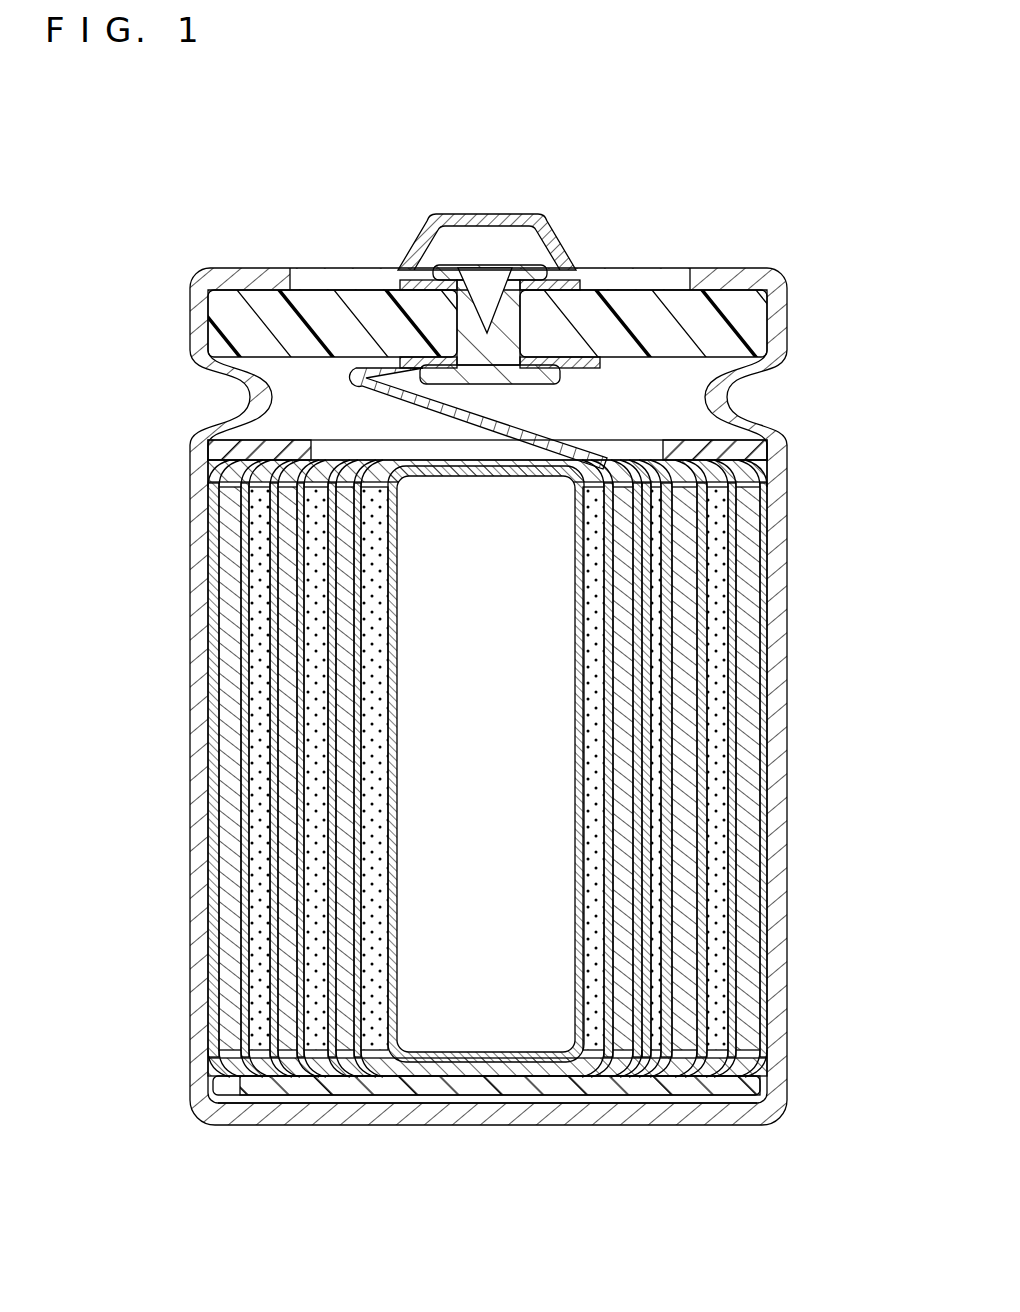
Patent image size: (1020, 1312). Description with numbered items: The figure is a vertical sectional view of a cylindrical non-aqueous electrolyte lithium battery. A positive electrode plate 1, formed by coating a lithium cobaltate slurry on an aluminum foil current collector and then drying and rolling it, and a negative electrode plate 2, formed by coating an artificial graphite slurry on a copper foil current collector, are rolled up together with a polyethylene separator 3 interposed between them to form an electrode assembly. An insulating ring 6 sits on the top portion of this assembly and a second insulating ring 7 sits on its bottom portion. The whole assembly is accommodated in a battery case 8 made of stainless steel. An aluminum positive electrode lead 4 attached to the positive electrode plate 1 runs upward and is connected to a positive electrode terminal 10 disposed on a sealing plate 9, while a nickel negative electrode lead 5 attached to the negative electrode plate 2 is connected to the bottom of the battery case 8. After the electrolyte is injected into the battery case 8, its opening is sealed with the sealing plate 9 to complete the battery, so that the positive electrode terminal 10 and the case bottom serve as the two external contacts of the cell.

The positive electrode plate 1 is at (715, 865).
The negative electrode plate 2 is at (745, 795).
The separator 3 is at (773, 690).
The positive electrode lead 4 is at (527, 437).
The negative electrode lead 5 is at (522, 1110).
The insulating ring 6 is at (748, 456).
The insulating ring 7 is at (750, 1093).
The battery case 8 is at (200, 603).
The sealing plate 9 is at (228, 314).
The positive electrode terminal 10 is at (463, 210).